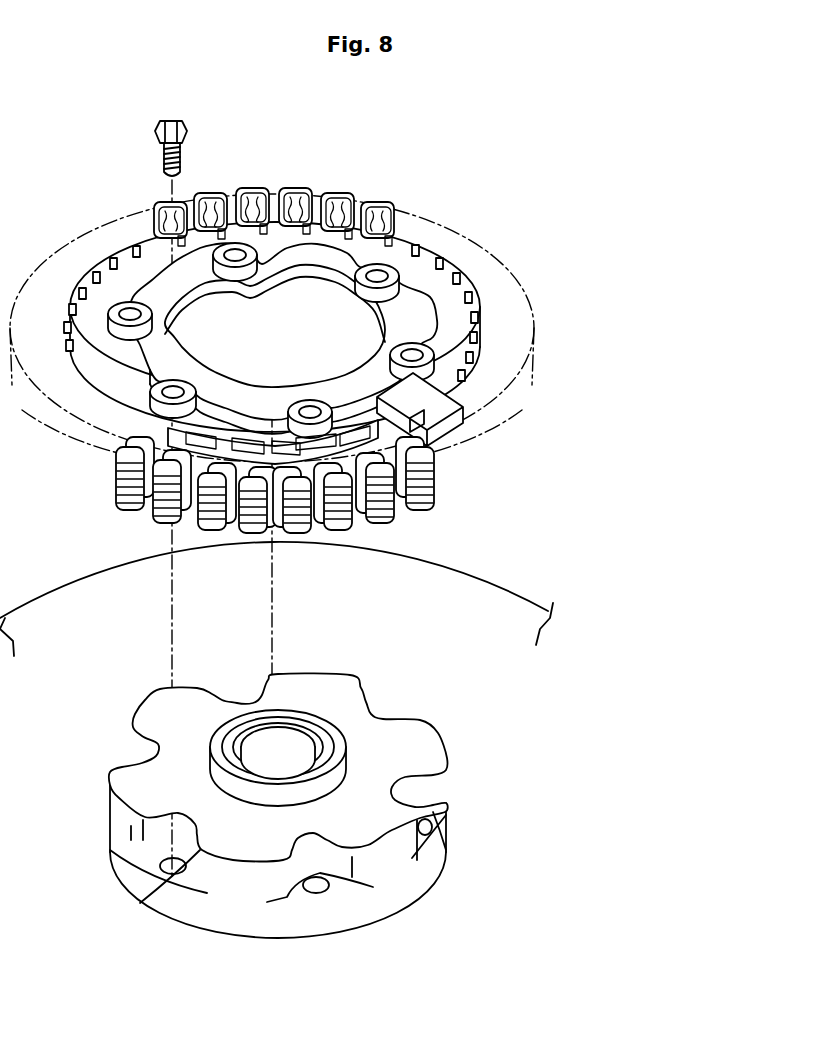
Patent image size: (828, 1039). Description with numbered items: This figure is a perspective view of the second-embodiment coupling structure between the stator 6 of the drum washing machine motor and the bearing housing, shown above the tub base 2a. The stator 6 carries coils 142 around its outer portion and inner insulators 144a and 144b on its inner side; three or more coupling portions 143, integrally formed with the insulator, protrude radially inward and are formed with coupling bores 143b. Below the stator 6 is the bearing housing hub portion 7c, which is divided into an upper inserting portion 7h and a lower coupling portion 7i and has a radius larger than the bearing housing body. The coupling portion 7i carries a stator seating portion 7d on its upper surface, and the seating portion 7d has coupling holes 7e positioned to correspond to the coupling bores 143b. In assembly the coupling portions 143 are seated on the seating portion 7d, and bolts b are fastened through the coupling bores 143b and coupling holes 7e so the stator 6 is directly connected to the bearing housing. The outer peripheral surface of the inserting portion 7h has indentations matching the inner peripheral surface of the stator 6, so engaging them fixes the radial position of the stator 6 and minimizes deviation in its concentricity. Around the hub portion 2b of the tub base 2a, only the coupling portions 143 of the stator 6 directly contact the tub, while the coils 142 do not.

The bolt b is at (171, 121).
The coils 142 is at (212, 210).
The inner insulator 144a is at (307, 255).
The stator 6 is at (272, 341).
The inner insulator 144b is at (305, 285).
The coupling portions 143 is at (178, 388).
The coupling bores 143b is at (197, 391).
The tub base 2a is at (487, 603).
The bearing housing hub portion 7c is at (316, 690).
The hub portion 2b is at (276, 779).
The inserting portion 7h is at (413, 844).
The coupling holes 7e is at (160, 868).
The seating portion 7d is at (170, 888).
The coupling portion 7i is at (408, 892).